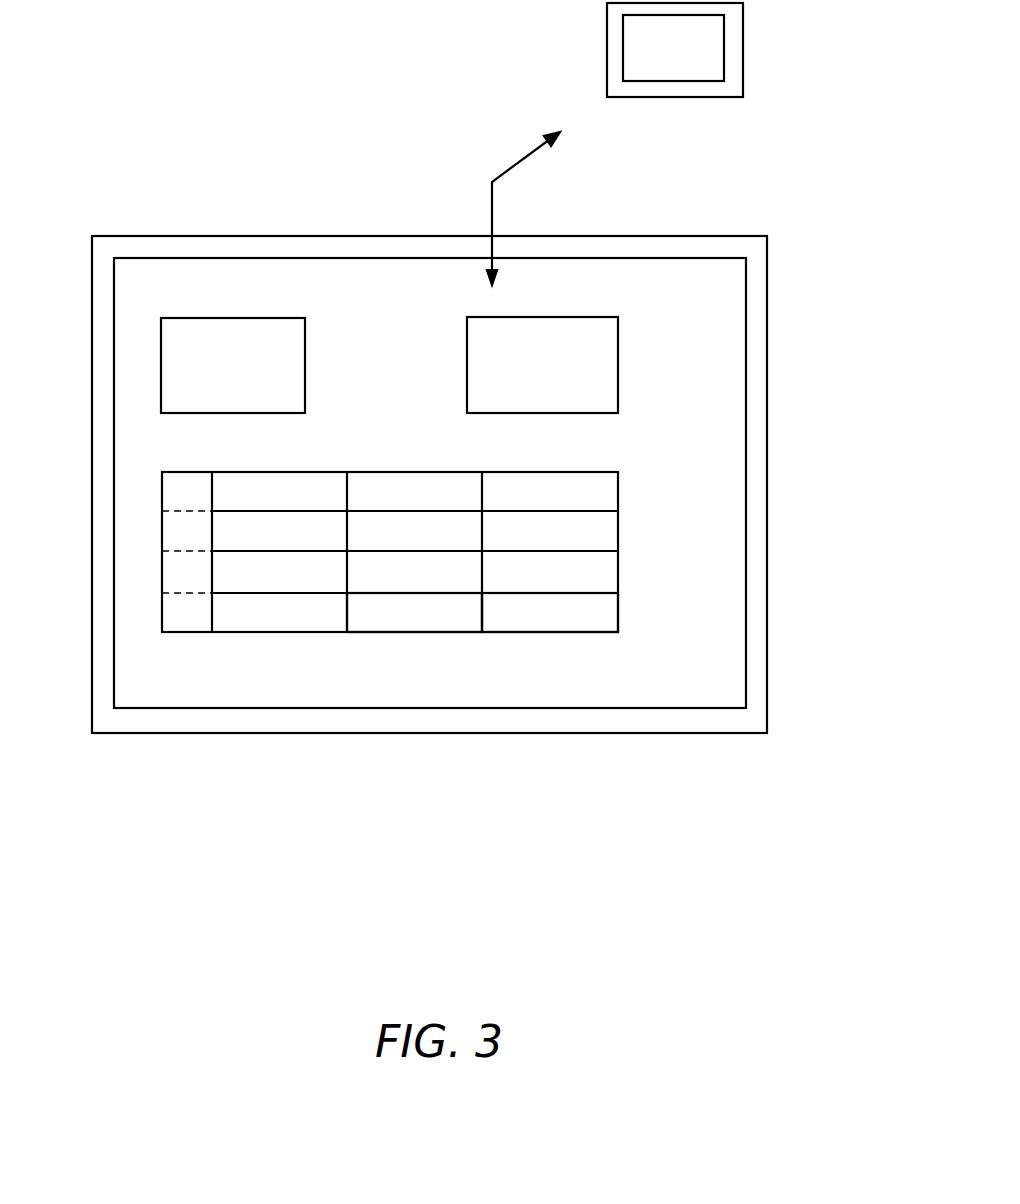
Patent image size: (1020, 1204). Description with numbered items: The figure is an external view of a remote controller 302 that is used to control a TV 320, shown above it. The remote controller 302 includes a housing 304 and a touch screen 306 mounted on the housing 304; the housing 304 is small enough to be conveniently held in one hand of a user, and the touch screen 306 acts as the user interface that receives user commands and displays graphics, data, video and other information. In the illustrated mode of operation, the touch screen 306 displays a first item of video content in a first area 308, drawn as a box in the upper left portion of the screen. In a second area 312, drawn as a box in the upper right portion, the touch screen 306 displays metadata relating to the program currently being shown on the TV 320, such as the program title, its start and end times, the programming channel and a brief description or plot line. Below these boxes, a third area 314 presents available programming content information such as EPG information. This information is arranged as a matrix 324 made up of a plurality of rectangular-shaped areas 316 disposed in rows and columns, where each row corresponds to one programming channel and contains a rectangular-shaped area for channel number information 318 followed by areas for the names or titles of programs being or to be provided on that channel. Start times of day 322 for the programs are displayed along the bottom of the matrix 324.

The remote controller 302 is at (437, 521).
The housing 304 is at (758, 707).
The touch screen 306 is at (732, 688).
The first area 308 is at (305, 351).
The second area 312 is at (618, 360).
The third area 314 is at (437, 588).
The rectangular-shaped areas 316 is at (427, 620).
The channel number information 318 is at (175, 478).
The TV 320 is at (607, 42).
The start times of day 322 is at (230, 673).
The matrix 324 is at (558, 632).